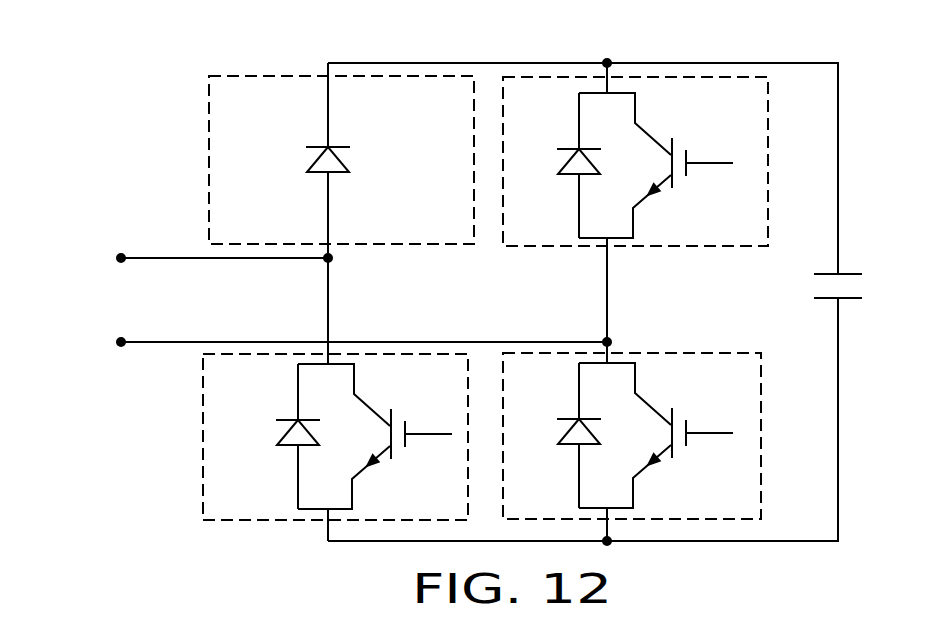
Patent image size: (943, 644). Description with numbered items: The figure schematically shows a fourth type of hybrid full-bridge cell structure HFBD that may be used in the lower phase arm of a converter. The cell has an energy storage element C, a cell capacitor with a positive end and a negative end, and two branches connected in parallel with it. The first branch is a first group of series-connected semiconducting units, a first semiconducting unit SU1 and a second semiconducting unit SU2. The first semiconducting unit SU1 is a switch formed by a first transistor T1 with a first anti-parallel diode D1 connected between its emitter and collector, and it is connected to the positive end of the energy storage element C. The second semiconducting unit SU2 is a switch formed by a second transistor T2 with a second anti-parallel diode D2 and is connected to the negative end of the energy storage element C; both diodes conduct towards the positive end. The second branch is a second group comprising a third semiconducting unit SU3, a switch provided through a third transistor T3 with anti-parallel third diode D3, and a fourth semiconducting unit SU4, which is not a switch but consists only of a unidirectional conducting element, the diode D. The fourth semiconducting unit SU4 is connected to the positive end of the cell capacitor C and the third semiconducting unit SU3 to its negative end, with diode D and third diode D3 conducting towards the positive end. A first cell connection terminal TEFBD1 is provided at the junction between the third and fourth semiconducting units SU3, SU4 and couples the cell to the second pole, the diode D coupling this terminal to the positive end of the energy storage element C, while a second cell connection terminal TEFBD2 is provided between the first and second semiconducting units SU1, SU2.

The fourth type of hybrid cell structure HFBD is at (160, 101).
The first cell connection terminal TEFBD1 is at (172, 232).
The second cell connection terminal TEFBD2 is at (310, 322).
The diode D is at (303, 213).
The first semiconducting unit SU1 is at (572, 246).
The second semiconducting unit SU2 is at (668, 350).
The third semiconducting unit SU3 is at (262, 519).
The fourth semiconducting unit SU4 is at (428, 243).
The first anti-parallel diode D1 is at (561, 165).
The first transistor T1 is at (656, 202).
The second anti-parallel diode D2 is at (557, 435).
The second transistor T2 is at (656, 441).
The third diode D3 is at (276, 436).
The third transistor T3 is at (375, 441).
The energy storage element C is at (820, 286).